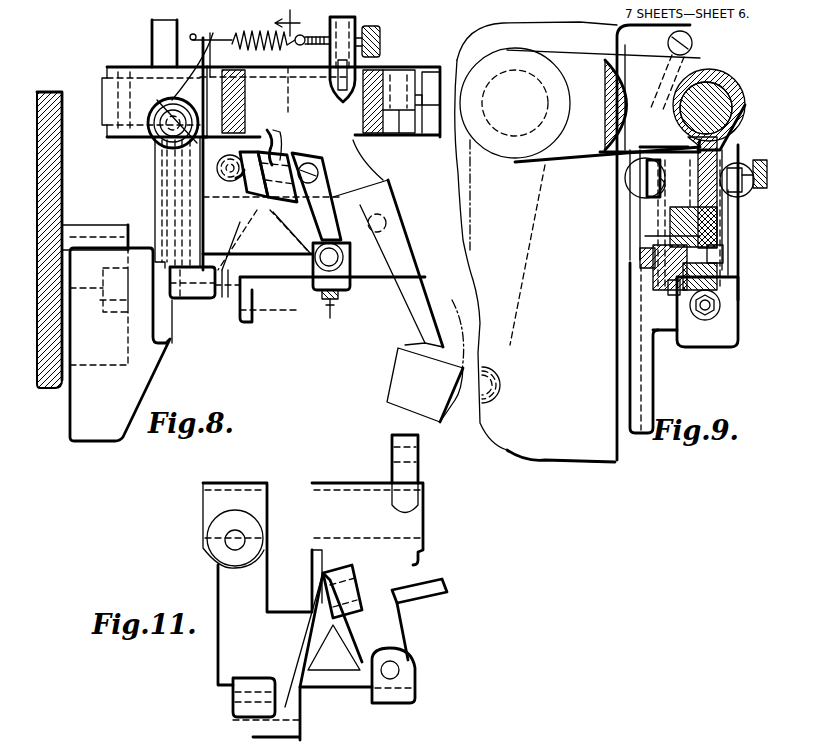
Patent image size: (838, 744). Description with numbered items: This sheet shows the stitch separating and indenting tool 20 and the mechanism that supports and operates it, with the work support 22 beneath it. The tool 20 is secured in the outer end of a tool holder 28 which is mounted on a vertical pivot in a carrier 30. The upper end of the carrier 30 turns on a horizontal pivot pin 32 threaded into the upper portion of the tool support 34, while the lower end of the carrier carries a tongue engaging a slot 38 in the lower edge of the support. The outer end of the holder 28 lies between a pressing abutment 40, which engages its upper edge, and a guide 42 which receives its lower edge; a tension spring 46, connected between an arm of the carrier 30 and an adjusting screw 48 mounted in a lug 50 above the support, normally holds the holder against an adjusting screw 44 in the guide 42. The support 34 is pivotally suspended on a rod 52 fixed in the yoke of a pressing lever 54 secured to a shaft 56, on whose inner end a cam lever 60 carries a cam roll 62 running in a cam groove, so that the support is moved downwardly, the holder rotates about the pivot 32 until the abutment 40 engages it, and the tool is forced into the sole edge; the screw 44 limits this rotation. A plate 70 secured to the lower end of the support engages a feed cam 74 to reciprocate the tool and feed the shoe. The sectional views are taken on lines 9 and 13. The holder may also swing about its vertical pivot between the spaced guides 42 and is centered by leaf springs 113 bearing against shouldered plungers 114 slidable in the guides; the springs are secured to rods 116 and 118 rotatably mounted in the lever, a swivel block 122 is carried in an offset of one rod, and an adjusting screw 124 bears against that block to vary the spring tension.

In FIG. 8, the section line 9— 9 is at (330, 350).
In FIG. 8, the section line 13— 13 is at (222, 354).
In FIG. 8, the stitch separating and indenting tool 20 is at (425, 325).
In FIG. 8, the work support 22 is at (405, 392).
In FIG. 8, the tool holder 28 is at (390, 243).
In FIG. 9, the tool holder 28 is at (645, 236).
In FIG. 8, the carrier 30 is at (172, 210).
In FIG. 8, the horizontal pivot pin 32 is at (152, 143).
In FIG. 8, the tool support 34 is at (383, 165).
In FIG. 11, the tool support 34 is at (415, 572).
In FIG. 11, the slot 38 is at (233, 708).
In FIG. 8, the pressing abutment 40 is at (367, 167).
In FIG. 11, the pressing abutment 40 is at (445, 597).
In FIG. 8, the guide 42 is at (348, 285).
In FIG. 9, the guide 42 is at (660, 282).
In FIG. 11, the guide 42 is at (410, 682).
In FIG. 8, the adjusting screw 44 is at (330, 318).
In FIG. 9, the adjusting screw 44 is at (672, 300).
In FIG. 8, the tension spring 46 is at (262, 47).
In FIG. 9, the tension spring 46 is at (692, 45).
In FIG. 8, the adjusting screw 48 is at (382, 32).
In FIG. 8, the lug 50 is at (355, 62).
In FIG. 11, the lug 50 is at (410, 475).
In FIG. 8, the rod 52 is at (160, 20).
In FIG. 9, the rod 52 is at (730, 90).
In FIG. 8, the pressing lever 54 is at (245, 90).
In FIG. 9, the pressing lever 54 is at (600, 65).
In FIG. 9, the shaft 56 is at (540, 120).
In FIG. 9, the cam lever 60 is at (515, 320).
In FIG. 9, the cam roll 62 is at (500, 402).
In FIG. 8, the plate 70 is at (80, 410).
In FIG. 9, the plate 70 is at (640, 428).
In FIG. 8, the feed cam 74 is at (78, 235).
In FIG. 9, the leaf springs 113 is at (640, 212).
In FIG. 9, the plungers 114 is at (648, 258).
In FIG. 8, the rod 116 is at (278, 162).
In FIG. 9, the rod 116 is at (640, 175).
In FIG. 9, the rod 118 is at (745, 166).
In FIG. 8, the swivel block 122 is at (236, 156).
In FIG. 9, the adjusting screw 124 is at (766, 178).